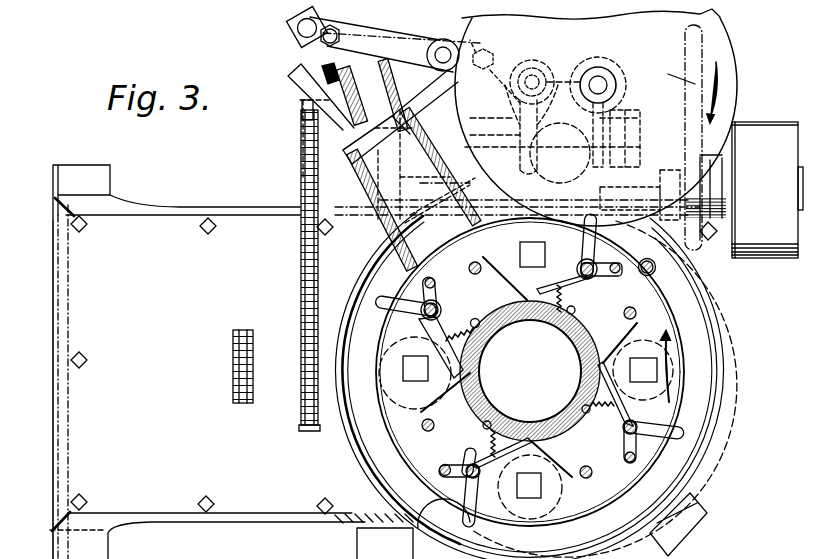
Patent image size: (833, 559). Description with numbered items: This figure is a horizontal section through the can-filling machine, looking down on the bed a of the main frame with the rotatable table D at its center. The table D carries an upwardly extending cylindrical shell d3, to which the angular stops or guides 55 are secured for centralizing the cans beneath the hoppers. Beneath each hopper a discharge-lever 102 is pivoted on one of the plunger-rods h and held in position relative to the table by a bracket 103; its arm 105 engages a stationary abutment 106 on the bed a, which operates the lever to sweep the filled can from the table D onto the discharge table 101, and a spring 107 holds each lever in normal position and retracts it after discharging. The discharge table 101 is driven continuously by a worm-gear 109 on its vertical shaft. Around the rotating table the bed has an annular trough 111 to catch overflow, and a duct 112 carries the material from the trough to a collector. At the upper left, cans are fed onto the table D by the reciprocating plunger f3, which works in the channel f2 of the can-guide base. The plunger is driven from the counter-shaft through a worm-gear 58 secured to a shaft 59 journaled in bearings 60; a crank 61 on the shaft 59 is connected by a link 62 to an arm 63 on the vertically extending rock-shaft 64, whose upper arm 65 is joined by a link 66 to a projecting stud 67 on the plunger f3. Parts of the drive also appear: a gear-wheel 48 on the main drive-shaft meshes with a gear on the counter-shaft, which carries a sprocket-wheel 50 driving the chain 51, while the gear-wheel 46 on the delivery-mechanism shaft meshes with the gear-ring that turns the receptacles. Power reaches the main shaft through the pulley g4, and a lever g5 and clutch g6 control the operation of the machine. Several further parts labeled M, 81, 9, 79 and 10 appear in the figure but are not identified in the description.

The casing M is at (231, 362).
The bed a is at (64, 421).
The chain 51 is at (302, 251).
The gear-wheel 46 is at (253, 360).
The rotatable table D is at (653, 319).
The annular trough 111 is at (680, 463).
The cylindrical shell d3 is at (568, 390).
The square openings 81 is at (522, 247).
The plunger-rods h is at (469, 268).
The angular stops or guides 55 is at (527, 296).
The discharge-lever 102 is at (420, 305).
The arm 105 is at (478, 505).
The bracket 103 is at (587, 248).
The spring 107 is at (455, 330).
The stationary abutment 106 is at (643, 275).
The worm-gear 109 is at (614, 66).
The duct 112 is at (392, 503).
The discharge table 101 is at (743, 66).
The lever g5 is at (671, 72).
The pulley g4 is at (765, 190).
The clutch g6 is at (708, 190).
The worm-gear 58 is at (565, 64).
The bearings 60 is at (594, 66).
The crank 61 is at (585, 93).
The shaft 59 is at (528, 63).
The arm 63 is at (492, 48).
The link 62 is at (497, 72).
The block 9 is at (459, 123).
The rock-shaft 64 is at (446, 46).
The arm 65 is at (383, 41).
The link 66 is at (296, 40).
The projecting stud 67 is at (288, 73).
The reciprocating plunger f3 is at (365, 83).
The channel f2 is at (375, 222).
The gear-wheel 48 is at (321, 125).
The wedge 79 is at (376, 139).
The sprocket-wheel 50 is at (303, 148).
The frame 10 is at (300, 536).